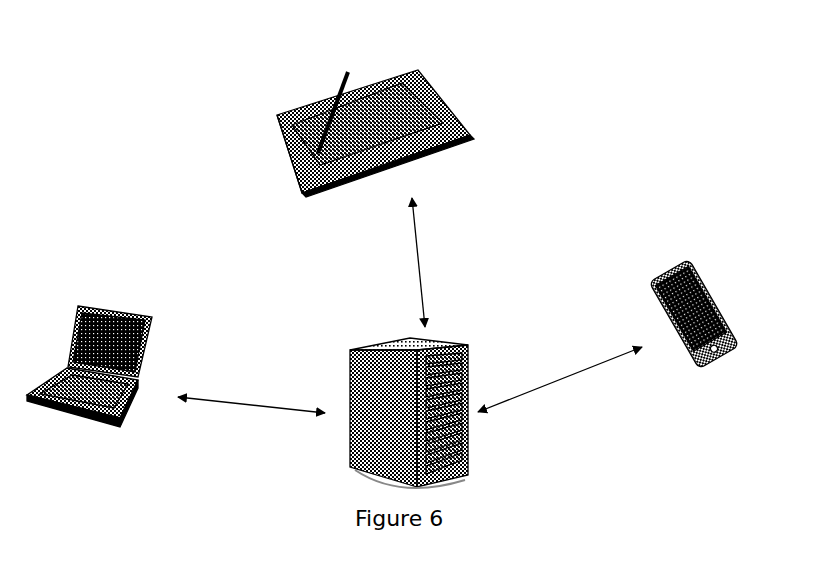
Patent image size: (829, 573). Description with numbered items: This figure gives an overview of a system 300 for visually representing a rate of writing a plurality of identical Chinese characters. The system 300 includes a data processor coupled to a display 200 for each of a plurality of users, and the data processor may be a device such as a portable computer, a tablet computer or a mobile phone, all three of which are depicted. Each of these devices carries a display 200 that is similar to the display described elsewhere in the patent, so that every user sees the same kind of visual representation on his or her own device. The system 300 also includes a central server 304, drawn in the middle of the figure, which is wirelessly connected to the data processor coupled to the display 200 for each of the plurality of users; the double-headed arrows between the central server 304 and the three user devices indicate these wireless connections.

The system 300 is at (670, 137).
The display 200 is at (403, 103).
The central server 304 is at (460, 450).